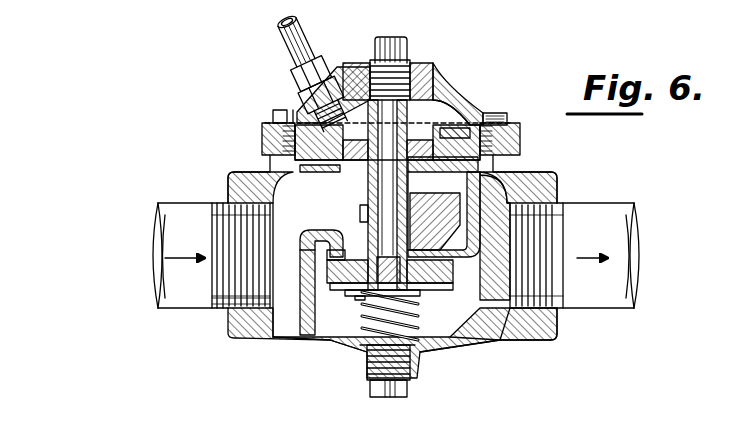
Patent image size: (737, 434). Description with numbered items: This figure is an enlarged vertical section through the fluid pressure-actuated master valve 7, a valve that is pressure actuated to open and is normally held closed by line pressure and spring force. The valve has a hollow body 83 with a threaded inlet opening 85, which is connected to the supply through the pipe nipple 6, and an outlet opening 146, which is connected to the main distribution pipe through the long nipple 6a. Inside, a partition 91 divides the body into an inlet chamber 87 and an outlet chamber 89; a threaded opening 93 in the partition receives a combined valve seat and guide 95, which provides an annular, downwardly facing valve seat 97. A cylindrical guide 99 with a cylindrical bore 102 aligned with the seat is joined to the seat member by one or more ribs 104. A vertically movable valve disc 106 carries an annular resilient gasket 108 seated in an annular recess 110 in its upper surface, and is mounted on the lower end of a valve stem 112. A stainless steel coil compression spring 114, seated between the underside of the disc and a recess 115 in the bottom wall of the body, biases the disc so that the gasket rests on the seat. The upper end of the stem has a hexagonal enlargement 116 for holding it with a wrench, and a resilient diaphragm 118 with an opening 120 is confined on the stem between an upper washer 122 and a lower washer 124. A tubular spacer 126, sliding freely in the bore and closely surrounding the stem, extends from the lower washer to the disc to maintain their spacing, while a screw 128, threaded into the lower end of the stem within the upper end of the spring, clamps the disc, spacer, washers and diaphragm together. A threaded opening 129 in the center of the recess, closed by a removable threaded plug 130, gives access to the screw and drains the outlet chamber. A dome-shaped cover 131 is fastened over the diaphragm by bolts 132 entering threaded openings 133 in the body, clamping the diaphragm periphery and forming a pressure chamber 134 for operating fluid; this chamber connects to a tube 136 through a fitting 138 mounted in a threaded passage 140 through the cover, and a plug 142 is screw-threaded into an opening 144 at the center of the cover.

The pipe nipple 6 is at (167, 203).
The long nipple 6a is at (613, 220).
The master valve 7 is at (243, 340).
The hollow body 83 is at (507, 332).
The threaded inlet opening 85 is at (220, 307).
The inlet chamber 87 is at (240, 200).
The outlet chamber 89 is at (463, 323).
The partition 91 is at (290, 320).
The threaded opening 93 is at (303, 253).
The combined valve seat and guide 95 is at (320, 230).
The valve seat 97 is at (455, 267).
The cylindrical guide 99 is at (366, 212).
The cylindrical bore 102 is at (368, 212).
The ribs 104 is at (433, 203).
The valve disc 106 is at (445, 285).
The annular resilient gasket 108 is at (357, 284).
The annular recess 110 is at (342, 313).
The valve stem 112 is at (400, 186).
The coil compression spring 114 is at (357, 340).
The recess 115 is at (417, 372).
The enlargement 116 is at (437, 117).
The resilient diaphragm 118 is at (517, 133).
The opening 120 is at (389, 177).
The upper washer 122 is at (457, 120).
The lower washer 124 is at (330, 157).
The tubular spacer 126 is at (433, 223).
The screw 128 is at (420, 303).
The threaded opening 129 is at (370, 380).
The removable threaded plug 130 is at (393, 395).
The dome-shaped cover 131 is at (437, 72).
The bolts 132 is at (280, 110).
The threaded openings 133 is at (262, 140).
The pressure chamber 134 is at (355, 66).
The tube 136 is at (278, 38).
The fitting 138 is at (285, 82).
The threaded passage 140 is at (320, 62).
The plug 142 is at (397, 38).
The opening 144 is at (413, 67).
The outlet opening 146 is at (560, 205).